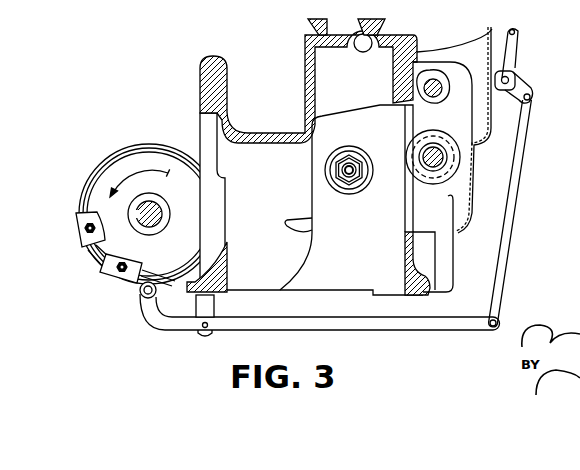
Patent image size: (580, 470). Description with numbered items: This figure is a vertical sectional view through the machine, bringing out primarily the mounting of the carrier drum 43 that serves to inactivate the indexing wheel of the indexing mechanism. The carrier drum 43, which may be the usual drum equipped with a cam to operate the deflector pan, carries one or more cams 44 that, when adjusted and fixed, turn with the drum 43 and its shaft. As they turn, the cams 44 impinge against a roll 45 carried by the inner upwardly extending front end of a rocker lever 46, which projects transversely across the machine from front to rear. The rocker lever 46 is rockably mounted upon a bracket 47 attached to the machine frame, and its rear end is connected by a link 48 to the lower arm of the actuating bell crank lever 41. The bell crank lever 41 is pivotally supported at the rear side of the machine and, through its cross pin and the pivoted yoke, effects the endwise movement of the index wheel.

The bell crank lever 41 is at (521, 51).
The carrier drum 43 is at (128, 167).
The cams 44 is at (101, 268).
The roll 45 is at (141, 293).
The rocker lever 46 is at (415, 332).
The bracket 47 is at (201, 308).
The link 48 is at (512, 232).